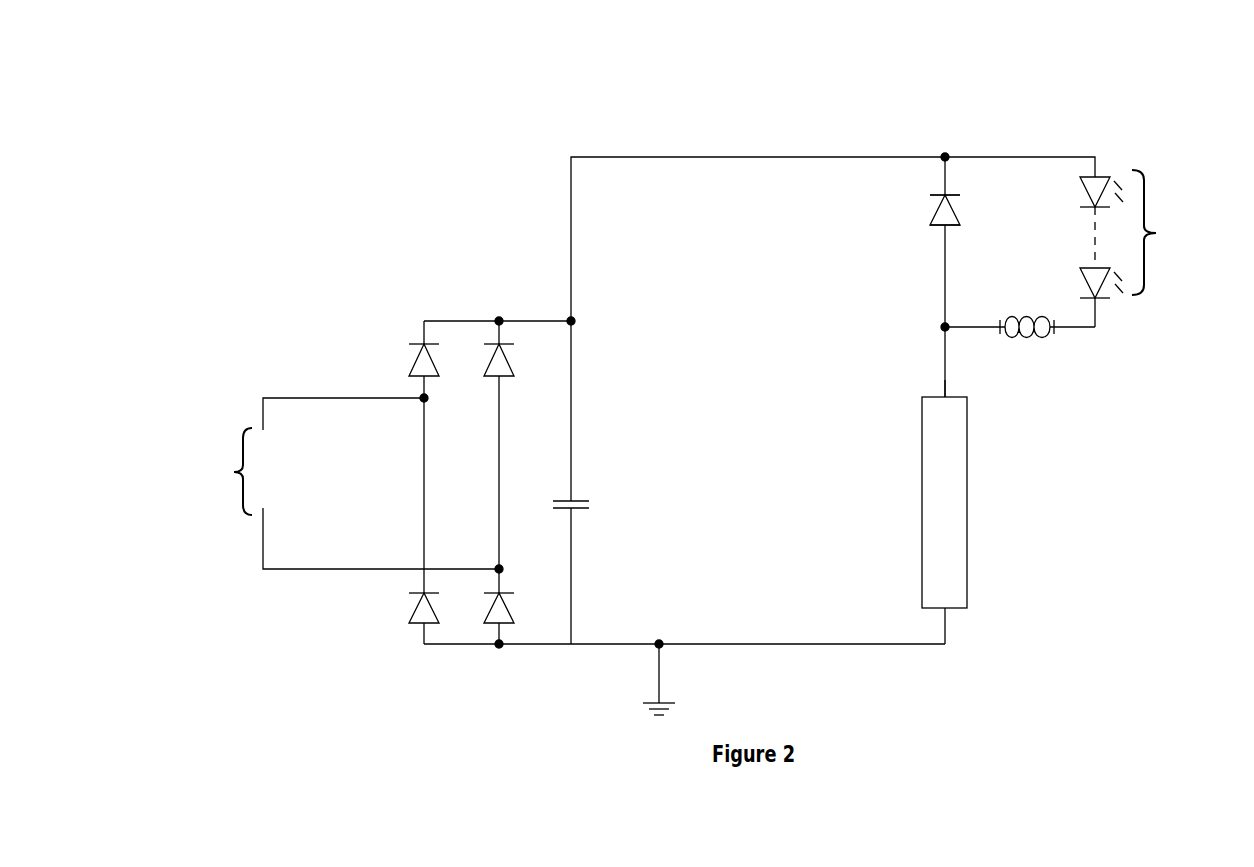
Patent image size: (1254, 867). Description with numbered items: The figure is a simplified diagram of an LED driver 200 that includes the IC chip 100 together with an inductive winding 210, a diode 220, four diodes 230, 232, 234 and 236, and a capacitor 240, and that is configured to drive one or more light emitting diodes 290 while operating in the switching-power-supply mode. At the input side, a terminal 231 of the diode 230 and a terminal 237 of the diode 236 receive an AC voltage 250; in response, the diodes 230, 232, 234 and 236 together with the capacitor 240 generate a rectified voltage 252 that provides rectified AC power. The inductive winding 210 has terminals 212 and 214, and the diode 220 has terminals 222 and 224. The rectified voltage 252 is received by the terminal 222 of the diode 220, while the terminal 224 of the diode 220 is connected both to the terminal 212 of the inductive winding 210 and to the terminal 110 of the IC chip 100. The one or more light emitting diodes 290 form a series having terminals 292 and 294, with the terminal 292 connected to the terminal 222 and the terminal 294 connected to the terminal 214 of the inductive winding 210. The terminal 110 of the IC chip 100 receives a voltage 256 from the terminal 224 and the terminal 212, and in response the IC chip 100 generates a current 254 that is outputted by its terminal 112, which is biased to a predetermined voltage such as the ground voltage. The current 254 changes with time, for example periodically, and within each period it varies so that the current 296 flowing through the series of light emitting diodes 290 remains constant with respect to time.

The IC chip 100 is at (968, 500).
The terminal 110 is at (947, 390).
The terminal 112 is at (947, 609).
The LED driver 200 is at (303, 96).
The inductive winding 210 is at (1040, 341).
The terminal 212 is at (1001, 327).
The terminal 214 is at (1054, 327).
The diode 220 is at (954, 207).
The terminal 222 is at (950, 193).
The terminal 224 is at (948, 227).
The diode 230 is at (432, 352).
The terminal 231 is at (428, 400).
The diode 232 is at (507, 358).
The diode 234 is at (433, 613).
The diode 236 is at (508, 613).
The terminal 237 is at (498, 566).
The capacitor 240 is at (584, 511).
The AC voltage 250 is at (343, 483).
The rectified voltage 252 is at (750, 157).
The current 254 is at (848, 644).
The voltage 256 is at (940, 362).
The light emitting diodes 290 is at (1166, 232).
The terminal 292 is at (1093, 174).
The terminal 294 is at (1098, 300).
The current 296 is at (1008, 157).